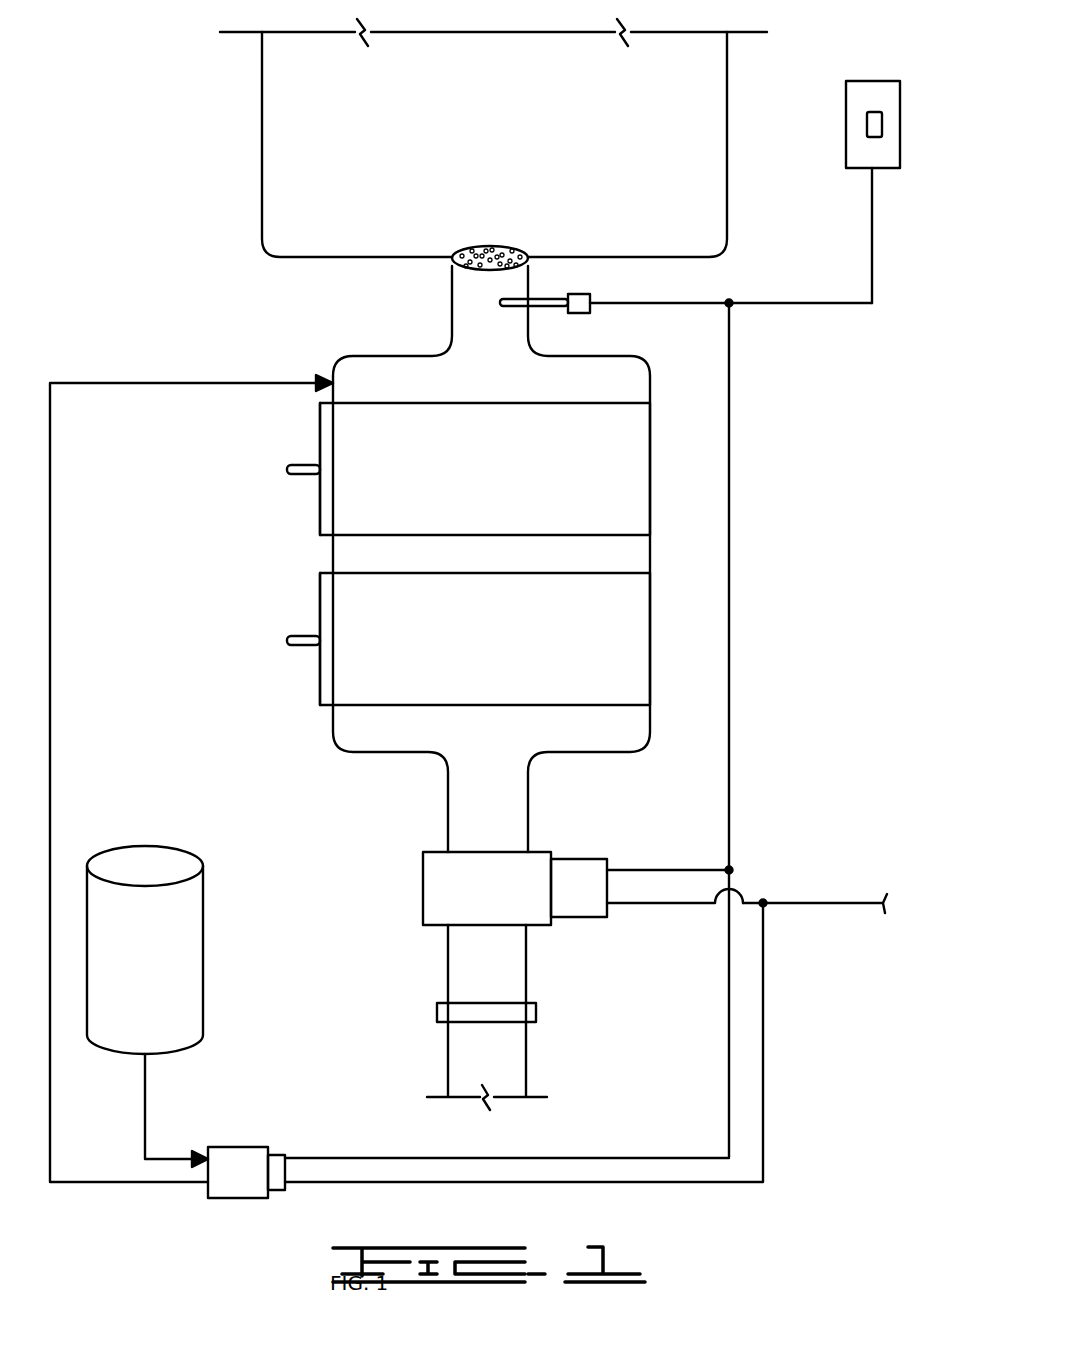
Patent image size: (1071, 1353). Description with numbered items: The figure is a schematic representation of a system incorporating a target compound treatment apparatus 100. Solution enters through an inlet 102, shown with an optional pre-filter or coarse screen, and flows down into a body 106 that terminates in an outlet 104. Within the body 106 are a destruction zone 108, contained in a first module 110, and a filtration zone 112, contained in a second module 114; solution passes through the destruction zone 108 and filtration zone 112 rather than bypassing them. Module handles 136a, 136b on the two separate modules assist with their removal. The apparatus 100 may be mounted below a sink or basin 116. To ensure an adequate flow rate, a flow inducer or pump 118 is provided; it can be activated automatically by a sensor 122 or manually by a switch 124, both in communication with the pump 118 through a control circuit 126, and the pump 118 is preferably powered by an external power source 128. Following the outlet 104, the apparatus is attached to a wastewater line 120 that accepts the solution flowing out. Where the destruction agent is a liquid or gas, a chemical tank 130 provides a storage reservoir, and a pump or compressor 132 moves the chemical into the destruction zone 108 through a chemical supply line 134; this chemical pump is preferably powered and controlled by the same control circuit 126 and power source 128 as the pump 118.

The target compound treatment apparatus 100 is at (242, 315).
The inlet 102 is at (478, 245).
The outlet 104 is at (536, 1012).
The body 106 is at (650, 630).
The destruction zone 108 is at (502, 492).
The first module 110 is at (320, 443).
The filtration zone 112 is at (502, 655).
The second module 114 is at (318, 688).
The sink or basin 116 is at (502, 155).
The pump 118 is at (423, 890).
The wastewater line 120 is at (448, 1065).
The sensor 122 is at (580, 313).
The switch 124 is at (846, 113).
The control circuit 126 is at (729, 477).
The external power source 128 is at (820, 903).
The chemical tank 130 is at (162, 972).
The pump or compressor 132 is at (233, 1147).
The chemical supply line 134 is at (51, 745).
The module handle 136a is at (287, 475).
The module handle 136b is at (287, 637).